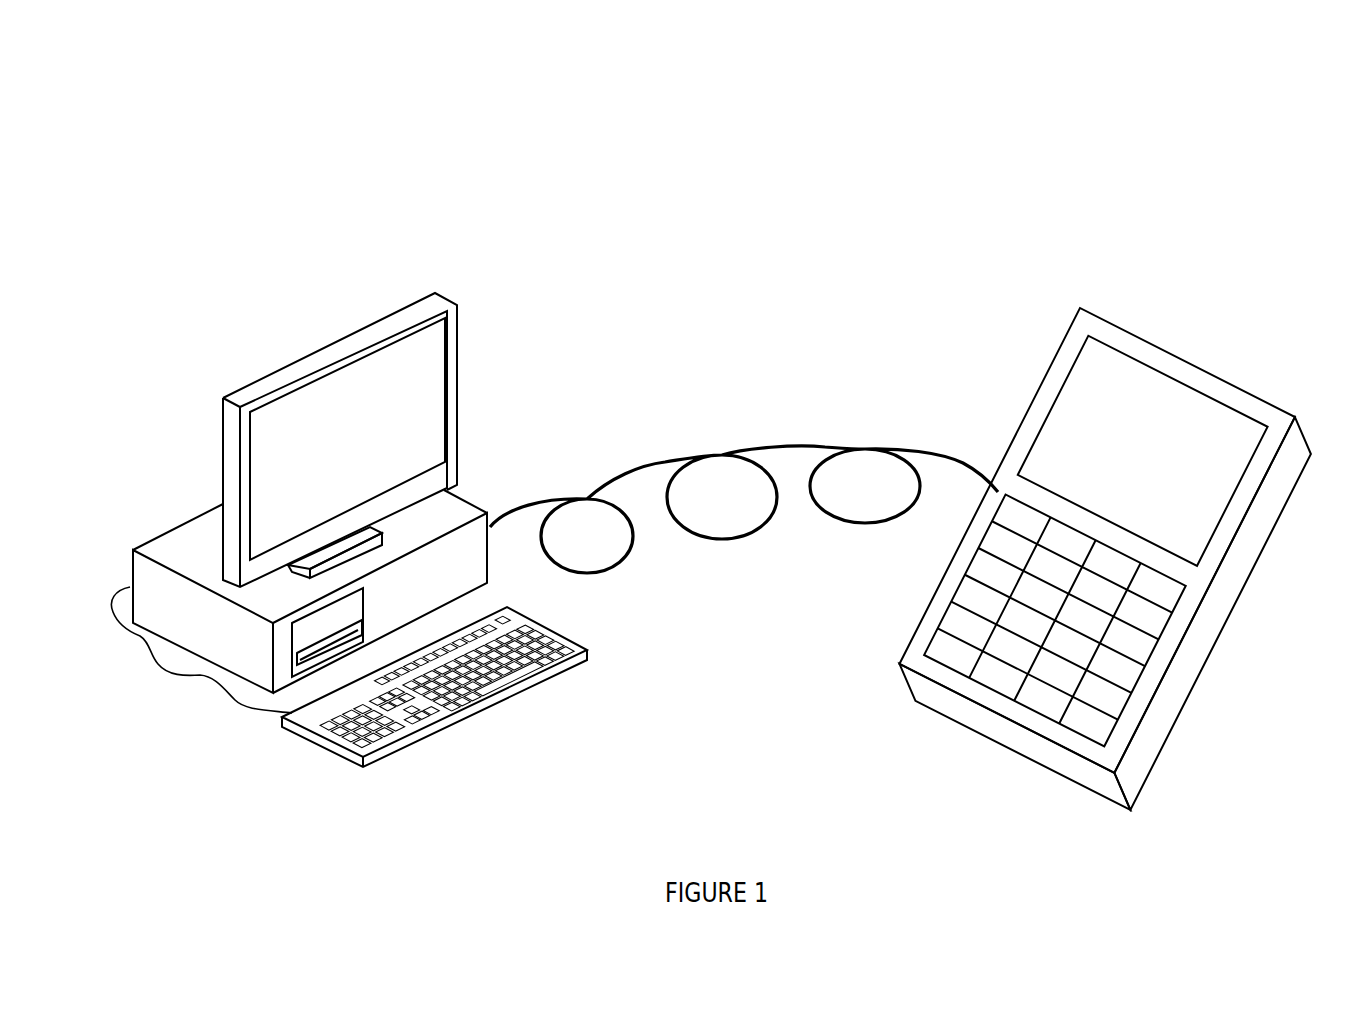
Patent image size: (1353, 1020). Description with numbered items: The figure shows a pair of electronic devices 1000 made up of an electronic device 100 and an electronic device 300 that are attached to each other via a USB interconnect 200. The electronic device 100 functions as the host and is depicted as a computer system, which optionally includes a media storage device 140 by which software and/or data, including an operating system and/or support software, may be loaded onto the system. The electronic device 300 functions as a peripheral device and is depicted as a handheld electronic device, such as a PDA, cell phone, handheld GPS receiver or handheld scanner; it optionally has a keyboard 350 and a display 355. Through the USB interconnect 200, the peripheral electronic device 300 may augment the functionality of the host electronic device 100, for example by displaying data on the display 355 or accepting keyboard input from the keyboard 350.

The pair of electronic devices 1000 is at (1182, 121).
The electronic device 100 is at (348, 332).
The media storage device 140 is at (365, 632).
The USB interconnect 200 is at (774, 445).
The electronic device 300 is at (1170, 352).
The keyboard 350 is at (952, 658).
The display 355 is at (1097, 380).